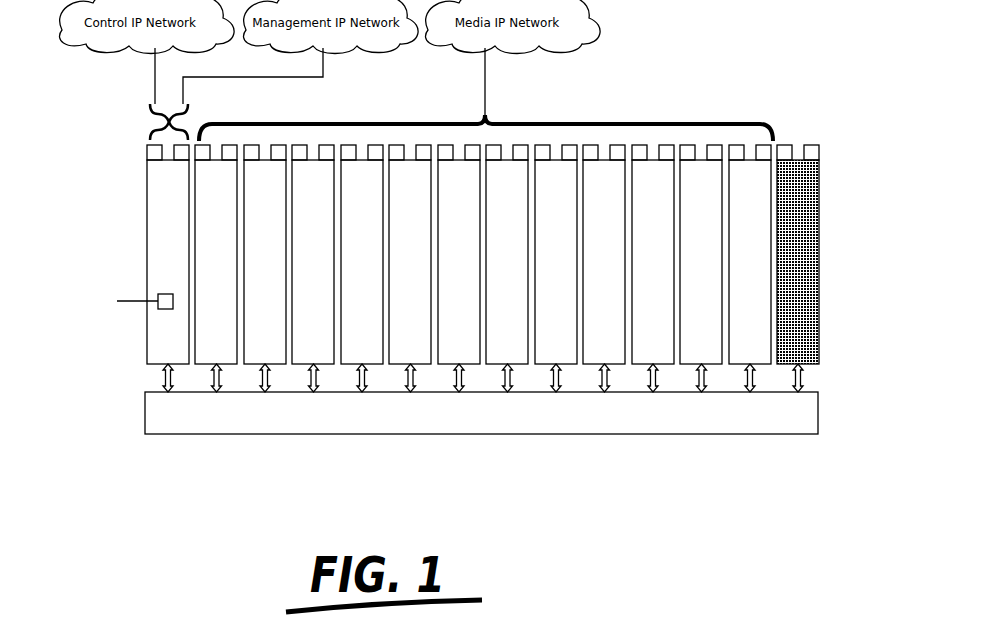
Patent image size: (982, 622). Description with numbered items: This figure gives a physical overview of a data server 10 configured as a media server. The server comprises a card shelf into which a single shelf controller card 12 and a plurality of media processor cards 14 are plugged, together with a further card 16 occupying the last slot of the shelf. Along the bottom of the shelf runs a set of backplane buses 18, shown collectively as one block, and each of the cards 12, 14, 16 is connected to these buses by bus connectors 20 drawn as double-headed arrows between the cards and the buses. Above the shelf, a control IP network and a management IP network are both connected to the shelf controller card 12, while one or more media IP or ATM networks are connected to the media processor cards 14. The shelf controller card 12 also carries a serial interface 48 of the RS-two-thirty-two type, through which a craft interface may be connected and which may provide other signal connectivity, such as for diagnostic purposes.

The data server 10 is at (118, 213).
The shelf controller card 12 is at (160, 256).
The media processor cards 14 is at (222, 318).
The card 16 is at (798, 250).
The backplane buses 18 is at (207, 428).
The bus connectors 20 is at (157, 380).
The RS-232 interface 48 is at (165, 311).